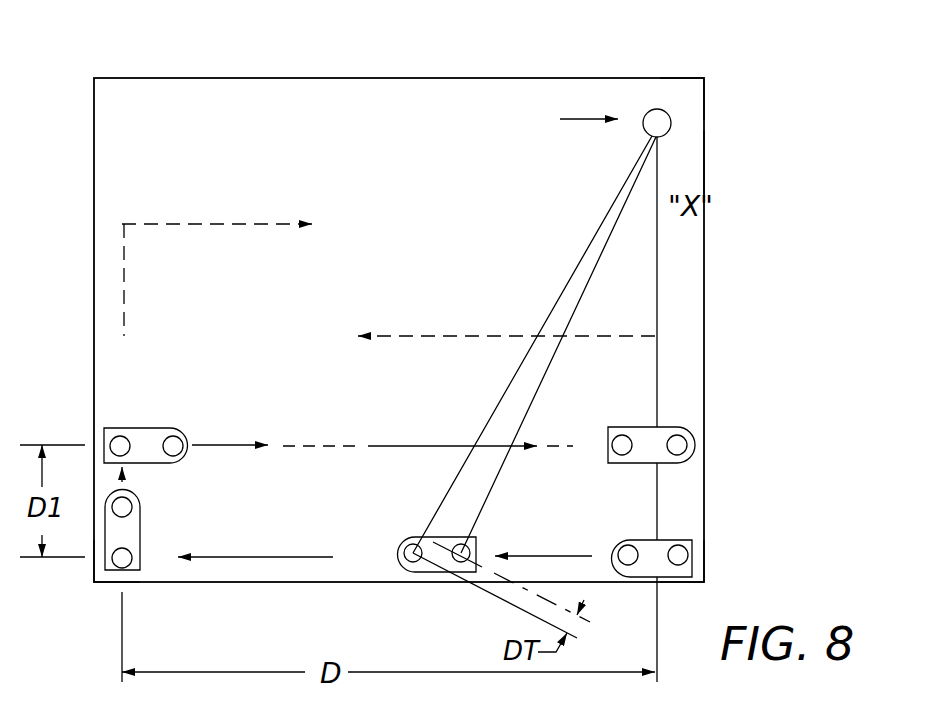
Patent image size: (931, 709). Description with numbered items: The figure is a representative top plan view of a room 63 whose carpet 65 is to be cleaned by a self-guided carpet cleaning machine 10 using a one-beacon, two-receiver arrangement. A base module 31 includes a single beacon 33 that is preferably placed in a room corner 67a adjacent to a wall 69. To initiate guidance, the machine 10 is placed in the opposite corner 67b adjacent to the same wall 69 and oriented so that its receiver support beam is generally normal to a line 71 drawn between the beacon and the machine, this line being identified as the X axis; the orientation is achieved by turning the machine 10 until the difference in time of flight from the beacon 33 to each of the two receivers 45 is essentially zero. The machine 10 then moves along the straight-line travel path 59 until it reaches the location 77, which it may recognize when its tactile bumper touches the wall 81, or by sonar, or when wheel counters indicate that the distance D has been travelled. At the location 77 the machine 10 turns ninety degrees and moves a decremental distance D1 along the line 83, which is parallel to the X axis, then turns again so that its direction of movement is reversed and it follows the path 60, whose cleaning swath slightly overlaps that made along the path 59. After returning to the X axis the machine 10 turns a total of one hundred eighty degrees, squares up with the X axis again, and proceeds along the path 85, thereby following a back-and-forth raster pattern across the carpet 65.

The room 63 is at (76, 122).
The carpet 65 is at (195, 95).
The room corner 67a is at (688, 93).
The beacon 33 is at (671, 125).
The wall 69 is at (704, 163).
The base module 31 is at (571, 121).
The line 71 is at (657, 285).
The path 85 is at (472, 335).
The path 60 is at (435, 446).
The machine 10 is at (683, 428).
The receivers 45 is at (685, 542).
The corner 67b is at (697, 573).
The travel path 59 is at (257, 556).
The location 77 is at (147, 565).
The wall 81 is at (93, 571).
The line 83 is at (120, 620).